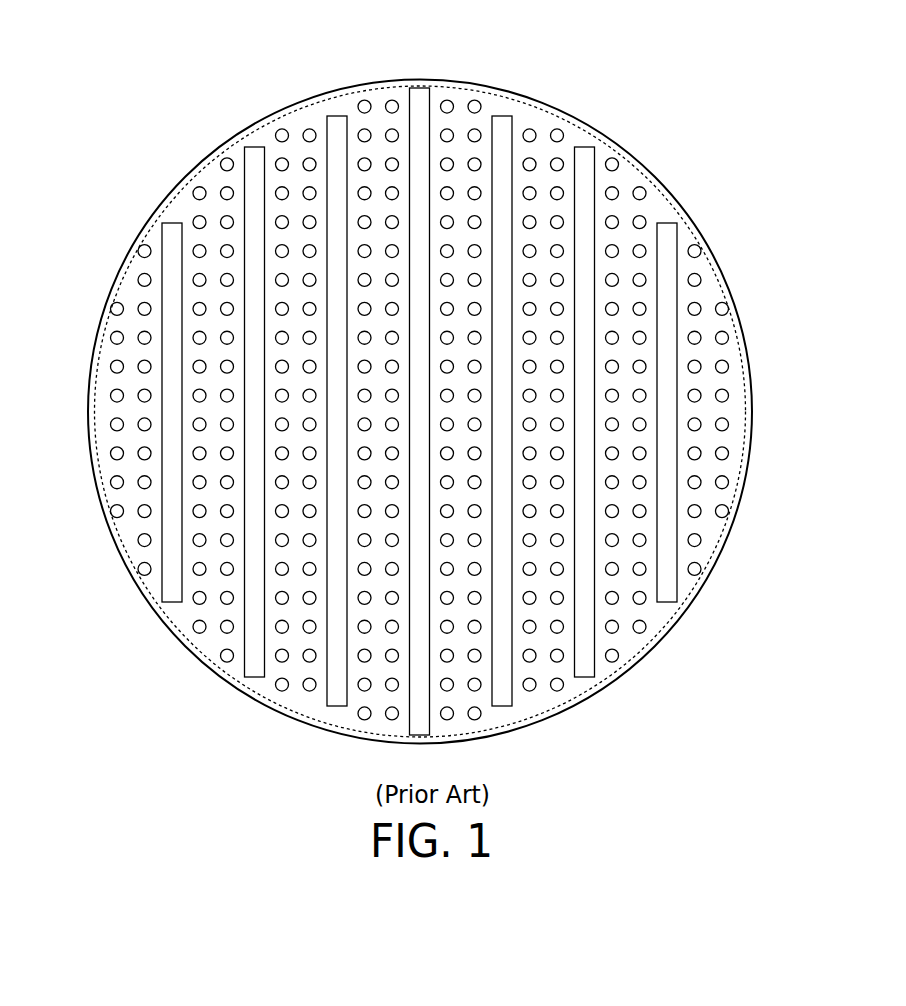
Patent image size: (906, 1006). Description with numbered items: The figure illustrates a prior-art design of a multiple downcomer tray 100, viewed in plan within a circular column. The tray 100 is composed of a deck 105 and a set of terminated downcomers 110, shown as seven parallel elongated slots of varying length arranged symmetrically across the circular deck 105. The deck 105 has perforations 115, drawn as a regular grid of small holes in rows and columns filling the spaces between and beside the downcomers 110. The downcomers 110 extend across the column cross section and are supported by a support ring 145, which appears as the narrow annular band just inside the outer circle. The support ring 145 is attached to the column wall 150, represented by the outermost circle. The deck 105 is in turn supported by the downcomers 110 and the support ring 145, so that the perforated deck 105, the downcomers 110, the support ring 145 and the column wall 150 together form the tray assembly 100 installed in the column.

The multiple downcomer tray 100 is at (146, 110).
The deck 105 is at (132, 287).
The terminated downcomers 110 is at (170, 221).
The perforations 115 is at (118, 337).
The support ring 145 is at (692, 222).
The column wall 150 is at (713, 252).